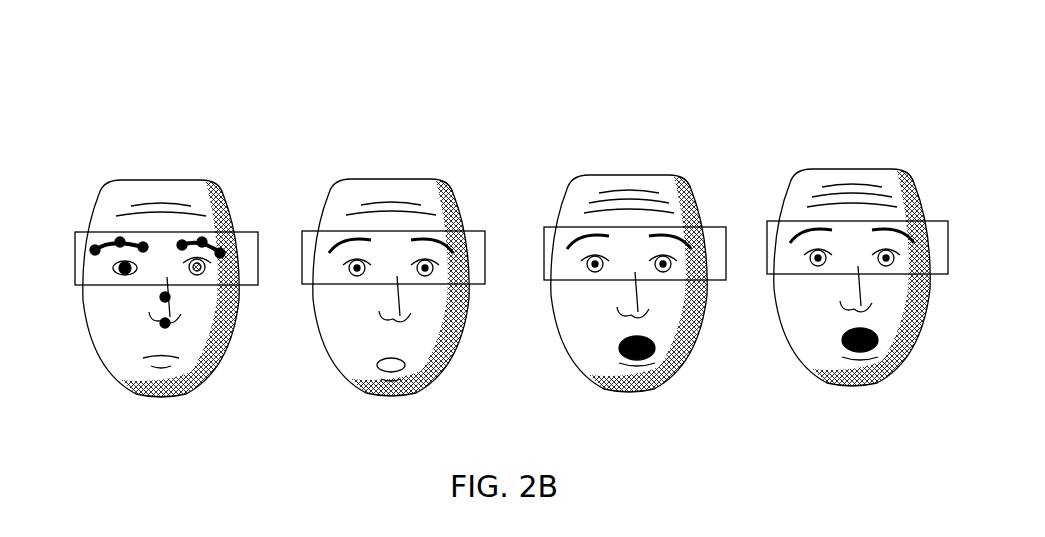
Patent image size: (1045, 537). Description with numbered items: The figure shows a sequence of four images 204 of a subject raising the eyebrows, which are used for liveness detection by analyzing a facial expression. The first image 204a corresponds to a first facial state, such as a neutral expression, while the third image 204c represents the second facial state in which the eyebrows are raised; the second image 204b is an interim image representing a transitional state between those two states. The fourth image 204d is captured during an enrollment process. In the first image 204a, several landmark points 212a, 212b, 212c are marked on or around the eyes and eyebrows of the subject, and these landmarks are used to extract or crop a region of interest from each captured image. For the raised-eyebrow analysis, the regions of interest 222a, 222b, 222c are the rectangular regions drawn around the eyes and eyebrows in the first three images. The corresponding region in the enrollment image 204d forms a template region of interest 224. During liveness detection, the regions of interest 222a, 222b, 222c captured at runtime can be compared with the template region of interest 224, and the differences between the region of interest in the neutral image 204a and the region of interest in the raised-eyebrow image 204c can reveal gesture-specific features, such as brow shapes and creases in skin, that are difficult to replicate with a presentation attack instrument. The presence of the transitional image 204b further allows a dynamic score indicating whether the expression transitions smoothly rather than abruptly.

The images 204 is at (515, 72).
The image 204a is at (152, 147).
The image 204b is at (365, 137).
The image 204c is at (593, 138).
The image 204d is at (833, 137).
The point 212a is at (93, 246).
The point 212b is at (120, 236).
The point 212c is at (145, 241).
The region of interest 222a is at (112, 283).
The region of interest 222b is at (338, 283).
The region of interest 222c is at (578, 280).
The template region of interest 224 is at (802, 273).